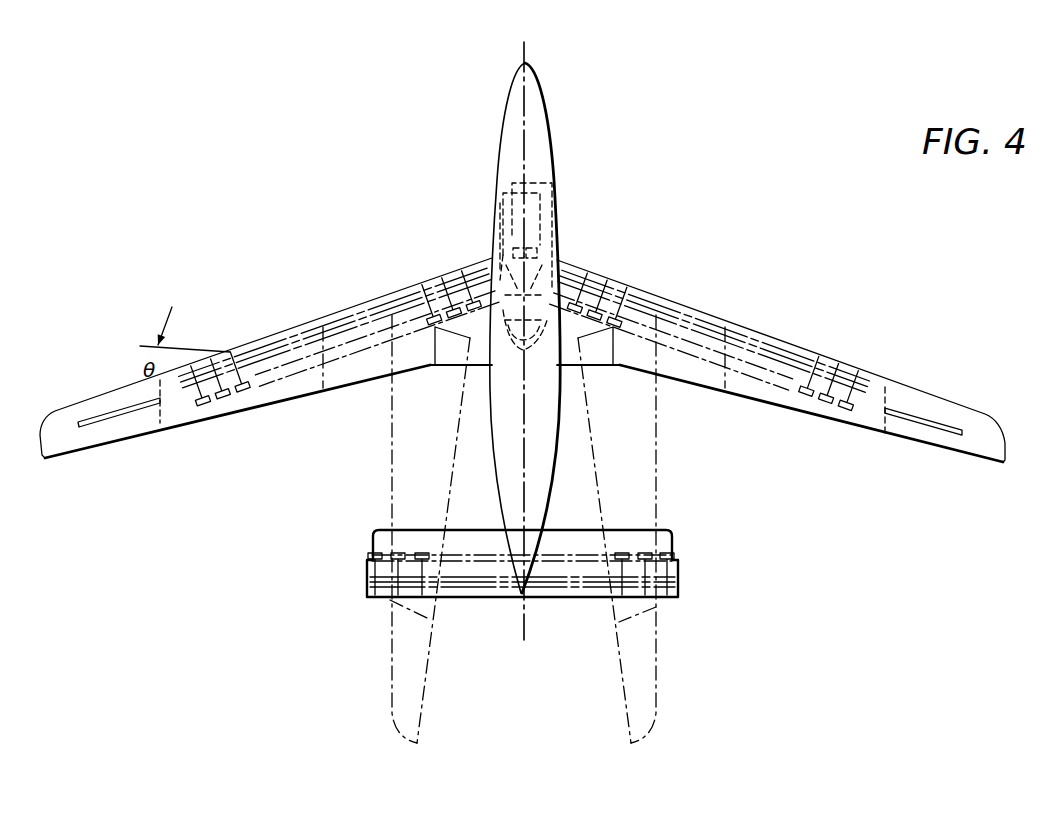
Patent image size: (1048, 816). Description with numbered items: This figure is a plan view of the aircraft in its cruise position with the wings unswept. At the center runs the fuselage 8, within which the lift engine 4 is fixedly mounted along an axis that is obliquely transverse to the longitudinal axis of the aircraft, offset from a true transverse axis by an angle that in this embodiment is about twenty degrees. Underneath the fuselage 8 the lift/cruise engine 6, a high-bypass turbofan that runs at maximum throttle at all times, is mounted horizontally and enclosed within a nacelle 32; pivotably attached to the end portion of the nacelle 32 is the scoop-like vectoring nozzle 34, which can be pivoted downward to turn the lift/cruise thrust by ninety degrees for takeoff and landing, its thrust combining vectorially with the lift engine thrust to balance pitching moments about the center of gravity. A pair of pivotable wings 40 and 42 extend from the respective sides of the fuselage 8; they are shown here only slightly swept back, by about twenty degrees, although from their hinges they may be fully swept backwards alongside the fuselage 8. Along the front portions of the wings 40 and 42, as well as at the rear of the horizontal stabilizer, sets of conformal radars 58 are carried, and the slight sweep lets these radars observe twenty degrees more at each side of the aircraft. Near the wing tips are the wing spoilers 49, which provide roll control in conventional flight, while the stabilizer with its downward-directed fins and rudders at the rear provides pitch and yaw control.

The lift engine 4 is at (563, 272).
The lift/cruise engine 6 is at (507, 213).
The fuselage 8 is at (553, 151).
The nacelle 32 is at (497, 196).
The vectoring nozzle 34 is at (499, 268).
The pivotable wing 40 is at (243, 409).
The pivotable wing 42 is at (857, 425).
The wing spoilers 49 is at (106, 417).
The conformal radars 58 is at (730, 368).